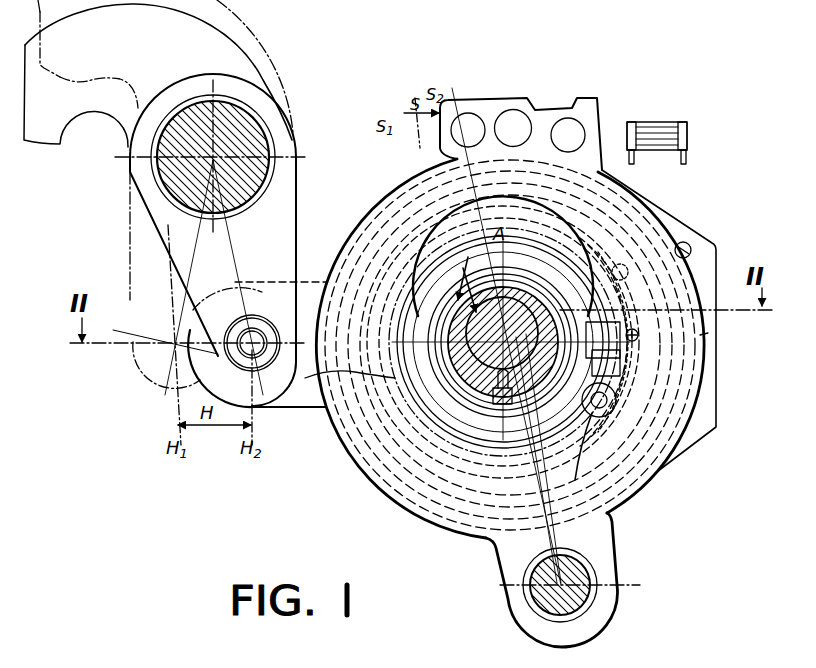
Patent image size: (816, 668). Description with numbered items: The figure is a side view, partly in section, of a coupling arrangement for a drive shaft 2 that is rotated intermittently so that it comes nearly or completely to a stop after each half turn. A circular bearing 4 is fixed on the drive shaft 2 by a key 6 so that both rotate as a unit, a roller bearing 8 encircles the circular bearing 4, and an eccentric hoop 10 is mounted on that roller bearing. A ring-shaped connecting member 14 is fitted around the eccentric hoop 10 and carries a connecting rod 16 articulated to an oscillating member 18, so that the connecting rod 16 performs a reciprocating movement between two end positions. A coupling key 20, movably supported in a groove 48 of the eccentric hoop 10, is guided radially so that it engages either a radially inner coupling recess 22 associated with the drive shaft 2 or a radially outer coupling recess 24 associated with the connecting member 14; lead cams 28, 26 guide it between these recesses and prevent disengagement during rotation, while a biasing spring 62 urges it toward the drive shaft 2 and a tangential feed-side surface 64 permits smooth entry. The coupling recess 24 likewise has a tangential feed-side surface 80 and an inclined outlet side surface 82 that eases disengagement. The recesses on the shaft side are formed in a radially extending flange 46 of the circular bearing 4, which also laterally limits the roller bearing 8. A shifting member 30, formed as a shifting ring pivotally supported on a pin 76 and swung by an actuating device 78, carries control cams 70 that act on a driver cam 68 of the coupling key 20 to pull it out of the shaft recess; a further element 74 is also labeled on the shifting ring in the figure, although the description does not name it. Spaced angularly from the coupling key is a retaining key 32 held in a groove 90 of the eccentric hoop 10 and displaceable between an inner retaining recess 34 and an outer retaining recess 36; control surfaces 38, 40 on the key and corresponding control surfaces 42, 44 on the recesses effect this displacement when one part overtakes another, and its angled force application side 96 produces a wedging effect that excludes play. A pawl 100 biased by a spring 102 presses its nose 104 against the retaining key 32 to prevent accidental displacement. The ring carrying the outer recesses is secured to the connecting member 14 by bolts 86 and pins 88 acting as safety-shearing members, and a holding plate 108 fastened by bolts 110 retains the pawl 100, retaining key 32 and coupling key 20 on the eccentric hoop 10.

The drive shaft 2 is at (467, 267).
The circular bearing 4 is at (459, 279).
The key 6 is at (497, 386).
The roller bearing 8 is at (372, 437).
The eccentric hoop 10 is at (458, 432).
The connecting member 14 is at (334, 437).
The connecting rod 16 is at (298, 404).
The oscillating member 18 is at (297, 194).
The coupling key 20 is at (600, 228).
The coupling recess 22 is at (567, 294).
The coupling recess 24 is at (721, 292).
The lead cam 26 is at (628, 213).
The lead cam 28 is at (533, 260).
The shifting member 30 is at (388, 188).
The retaining key 32 is at (605, 363).
The retaining recess 34 is at (503, 342).
The retaining recess 36 is at (682, 415).
The control surface 38 is at (586, 406).
The control surface 40 is at (700, 375).
The control surface 42 is at (548, 418).
The control surface 44 is at (692, 395).
The radially extending flange 46 is at (481, 424).
The groove 48 is at (510, 342).
The biasing spring 62 is at (713, 268).
The feed-side surface 64 is at (562, 278).
The driver cam 68 is at (736, 312).
The control cams 70 is at (700, 335).
The disc 74 is at (702, 355).
The pin 76 is at (542, 595).
The actuating device 78 is at (657, 124).
The feed-side surface 80 is at (392, 338).
The outlet side surface 82 is at (406, 392).
The bolts 86 is at (685, 242).
The pins 88 is at (663, 474).
The groove 90 is at (612, 339).
The force application side 96 is at (716, 427).
The pawl 100 is at (575, 479).
The spring 102 is at (708, 468).
The nose 104 is at (717, 447).
The holding plate 108 is at (665, 463).
The bolts 110 is at (647, 506).